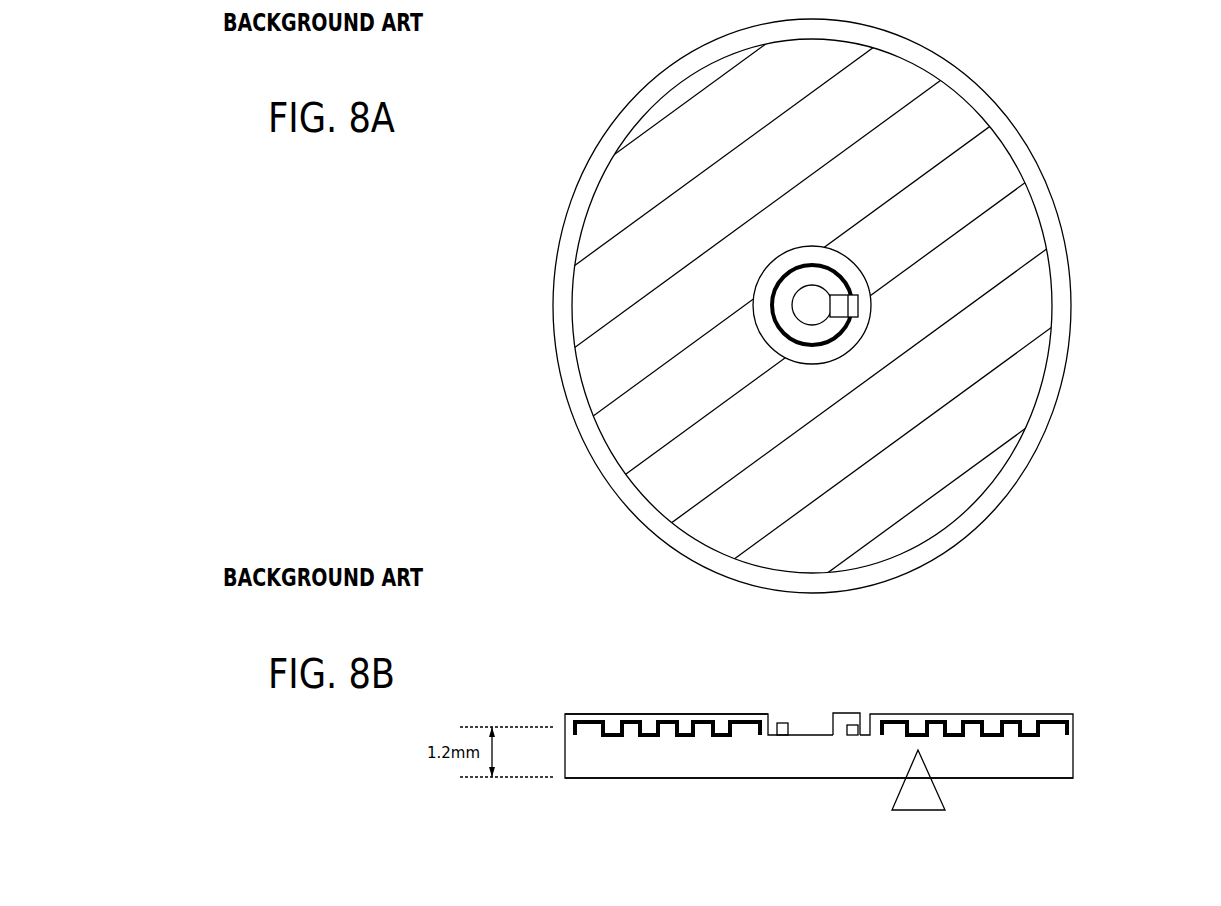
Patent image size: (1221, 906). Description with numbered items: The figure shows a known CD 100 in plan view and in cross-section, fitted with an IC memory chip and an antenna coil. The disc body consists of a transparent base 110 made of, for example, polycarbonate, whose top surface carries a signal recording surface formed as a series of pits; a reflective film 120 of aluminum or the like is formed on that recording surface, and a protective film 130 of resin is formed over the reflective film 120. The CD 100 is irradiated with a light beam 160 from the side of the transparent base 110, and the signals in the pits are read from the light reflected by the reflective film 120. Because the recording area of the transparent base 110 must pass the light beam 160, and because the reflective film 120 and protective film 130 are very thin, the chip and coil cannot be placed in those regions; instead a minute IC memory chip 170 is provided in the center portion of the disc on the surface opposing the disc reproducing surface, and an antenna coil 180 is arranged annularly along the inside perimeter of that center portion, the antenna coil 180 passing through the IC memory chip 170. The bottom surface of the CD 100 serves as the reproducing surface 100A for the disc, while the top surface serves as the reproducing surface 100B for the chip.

In FIG. 8A, the CD 100 is at (1068, 391).
In FIG. 8B, the CD 100 is at (856, 733).
In FIG. 8B, the reproducing surface for the disc 100A is at (835, 778).
In FIG. 8B, the reproducing surface for the chip 100B is at (723, 714).
In FIG. 8B, the transparent base 110 is at (1055, 762).
In FIG. 8B, the reflective film 120 is at (1050, 727).
In FIG. 8B, the protective film 130 is at (1050, 713).
In FIG. 8B, the light beam 160 is at (928, 793).
In FIG. 8A, the IC memory chip 170 is at (860, 306).
In FIG. 8B, the IC memory chip 170 is at (858, 712).
In FIG. 8A, the antenna coil 180 is at (833, 343).
In FIG. 8B, the antenna coil 180 is at (783, 722).